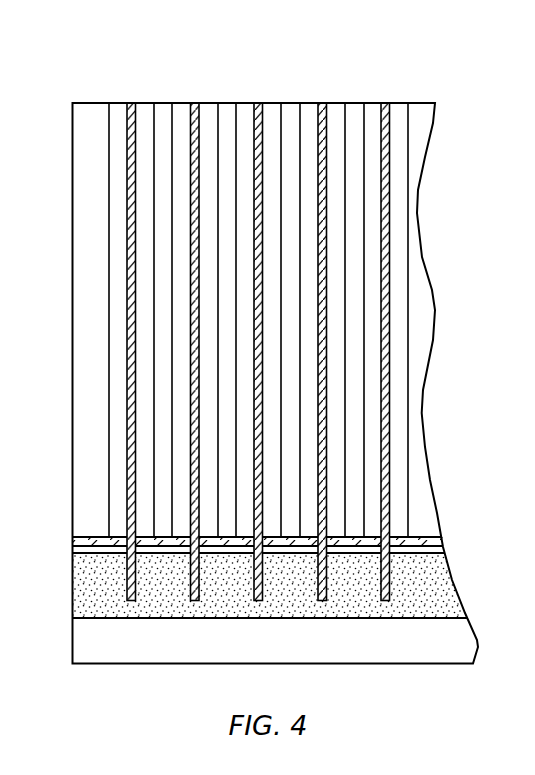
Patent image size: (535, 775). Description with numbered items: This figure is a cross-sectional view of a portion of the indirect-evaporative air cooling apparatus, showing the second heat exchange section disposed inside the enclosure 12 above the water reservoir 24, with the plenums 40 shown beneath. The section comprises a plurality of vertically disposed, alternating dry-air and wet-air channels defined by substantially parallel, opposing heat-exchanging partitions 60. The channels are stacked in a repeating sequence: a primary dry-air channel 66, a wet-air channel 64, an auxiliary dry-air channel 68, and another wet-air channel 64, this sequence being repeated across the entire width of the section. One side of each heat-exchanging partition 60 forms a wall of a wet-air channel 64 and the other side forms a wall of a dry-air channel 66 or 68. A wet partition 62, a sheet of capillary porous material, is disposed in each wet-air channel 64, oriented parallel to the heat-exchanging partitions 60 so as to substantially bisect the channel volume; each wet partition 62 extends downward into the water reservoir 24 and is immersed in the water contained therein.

The enclosure 12 is at (72, 438).
The water reservoir 24 is at (80, 585).
The plenums 40 is at (270, 637).
The heat-exchanging partitions 60 is at (172, 362).
The wet partition 62 is at (128, 112).
The wet-air channel 64 is at (115, 112).
The primary dry-air channel 66 is at (91, 112).
The auxiliary dry-air channel 68 is at (166, 112).